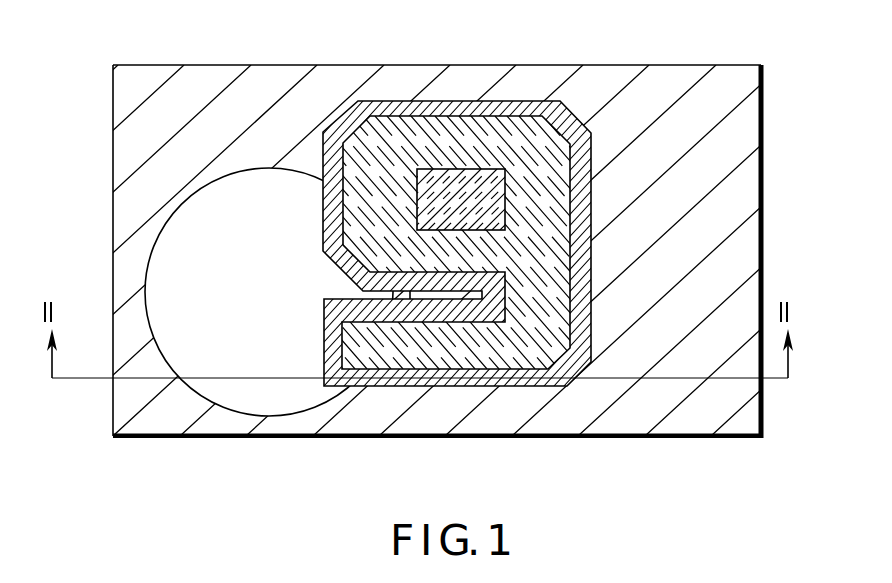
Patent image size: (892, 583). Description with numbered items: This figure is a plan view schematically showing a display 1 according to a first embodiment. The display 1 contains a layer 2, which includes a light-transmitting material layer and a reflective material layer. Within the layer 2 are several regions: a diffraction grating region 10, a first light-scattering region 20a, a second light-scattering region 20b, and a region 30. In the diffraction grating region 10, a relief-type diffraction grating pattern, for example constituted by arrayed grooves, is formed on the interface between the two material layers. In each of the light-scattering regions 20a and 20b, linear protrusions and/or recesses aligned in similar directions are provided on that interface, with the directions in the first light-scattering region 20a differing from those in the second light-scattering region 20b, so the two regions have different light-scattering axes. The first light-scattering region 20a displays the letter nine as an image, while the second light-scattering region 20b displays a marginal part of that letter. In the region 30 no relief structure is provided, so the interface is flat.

The display 1 is at (774, 112).
The layer 2 is at (686, 83).
The diffraction grating region 10 is at (757, 207).
The first light-scattering region 20a is at (513, 115).
The second light-scattering region 20b is at (448, 110).
The region 30 is at (251, 413).